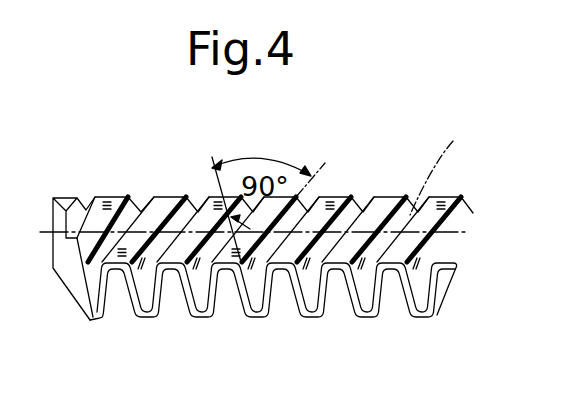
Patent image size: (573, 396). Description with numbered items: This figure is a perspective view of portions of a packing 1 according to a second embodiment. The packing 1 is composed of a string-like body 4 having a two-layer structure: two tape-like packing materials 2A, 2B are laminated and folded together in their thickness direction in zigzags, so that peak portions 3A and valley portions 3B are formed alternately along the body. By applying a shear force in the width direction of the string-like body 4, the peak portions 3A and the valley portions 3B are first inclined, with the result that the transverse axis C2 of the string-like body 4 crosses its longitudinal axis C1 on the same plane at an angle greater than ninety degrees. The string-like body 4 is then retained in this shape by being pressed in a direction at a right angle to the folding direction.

The packing 1 is at (172, 186).
The string-like body 4 is at (108, 195).
The tape-like packing material 2A is at (182, 319).
The tape-like packing material 2B is at (122, 319).
The peak portions 3A is at (393, 200).
The valley portions 3B is at (318, 322).
The longitudinal axis C1 is at (443, 161).
The transverse axis C2 is at (323, 163).